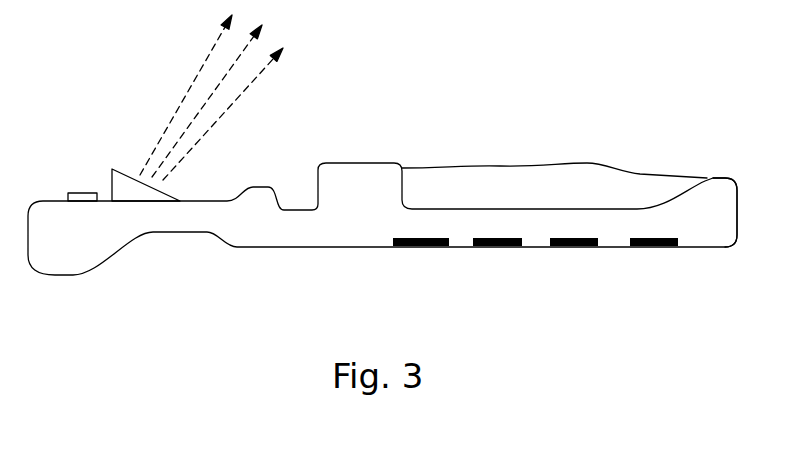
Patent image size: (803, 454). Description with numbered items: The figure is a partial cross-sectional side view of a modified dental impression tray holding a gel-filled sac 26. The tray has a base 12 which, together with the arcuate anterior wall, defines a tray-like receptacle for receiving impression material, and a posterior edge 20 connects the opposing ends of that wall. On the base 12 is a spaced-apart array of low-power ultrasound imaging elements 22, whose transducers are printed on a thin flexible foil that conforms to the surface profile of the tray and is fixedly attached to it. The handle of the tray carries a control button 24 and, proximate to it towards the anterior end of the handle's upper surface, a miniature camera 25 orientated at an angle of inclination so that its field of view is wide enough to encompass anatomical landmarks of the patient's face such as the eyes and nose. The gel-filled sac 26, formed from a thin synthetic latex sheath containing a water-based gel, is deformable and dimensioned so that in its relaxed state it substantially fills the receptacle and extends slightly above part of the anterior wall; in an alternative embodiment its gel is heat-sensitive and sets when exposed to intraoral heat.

The base 12 is at (612, 221).
The posterior edge 20 is at (717, 196).
The ultrasound imaging elements 22 is at (423, 247).
The control button 24 is at (78, 191).
The miniature camera 25 is at (130, 195).
The gel-filled sac 26 is at (413, 162).